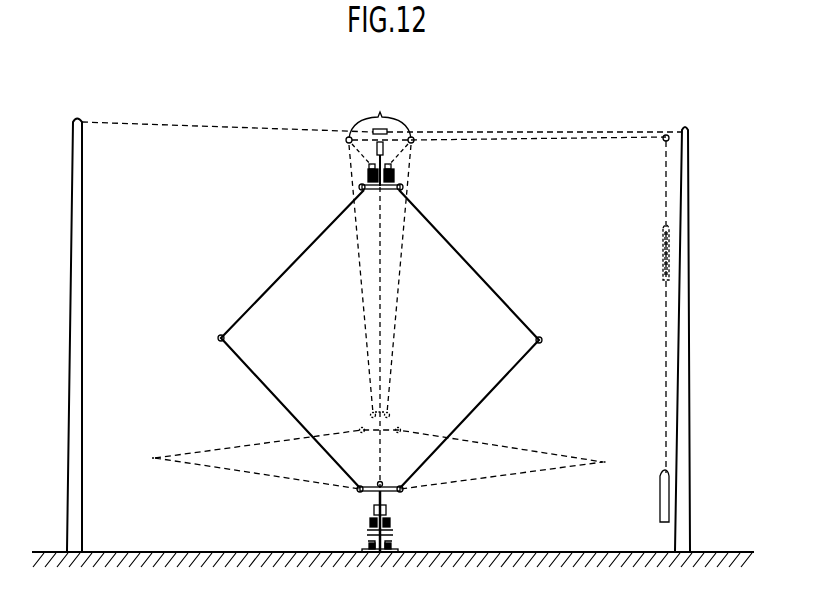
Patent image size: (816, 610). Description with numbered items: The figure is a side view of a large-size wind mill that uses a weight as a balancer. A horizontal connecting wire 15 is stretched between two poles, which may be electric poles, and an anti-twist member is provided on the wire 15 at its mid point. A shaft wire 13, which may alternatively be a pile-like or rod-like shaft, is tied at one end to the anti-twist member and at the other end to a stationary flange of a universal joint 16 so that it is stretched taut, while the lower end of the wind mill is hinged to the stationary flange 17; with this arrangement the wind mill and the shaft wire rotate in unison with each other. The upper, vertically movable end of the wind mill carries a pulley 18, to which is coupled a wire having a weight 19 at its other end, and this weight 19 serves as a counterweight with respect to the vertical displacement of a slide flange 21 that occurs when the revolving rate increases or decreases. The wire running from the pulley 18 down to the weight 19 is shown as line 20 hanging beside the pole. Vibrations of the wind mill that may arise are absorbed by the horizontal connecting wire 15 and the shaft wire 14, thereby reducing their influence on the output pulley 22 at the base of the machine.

The shaft wire 13 is at (380, 270).
The shaft wire 14 is at (690, 210).
The horizontal connecting wire 15 is at (234, 127).
The universal joint 16 is at (389, 510).
The stationary flange 17 is at (389, 487).
The pulley 18 is at (380, 290).
The weight 19 is at (660, 510).
The hoisting line 20 is at (585, 141).
The slide flange 21 is at (398, 190).
The output pulley 22 is at (392, 531).